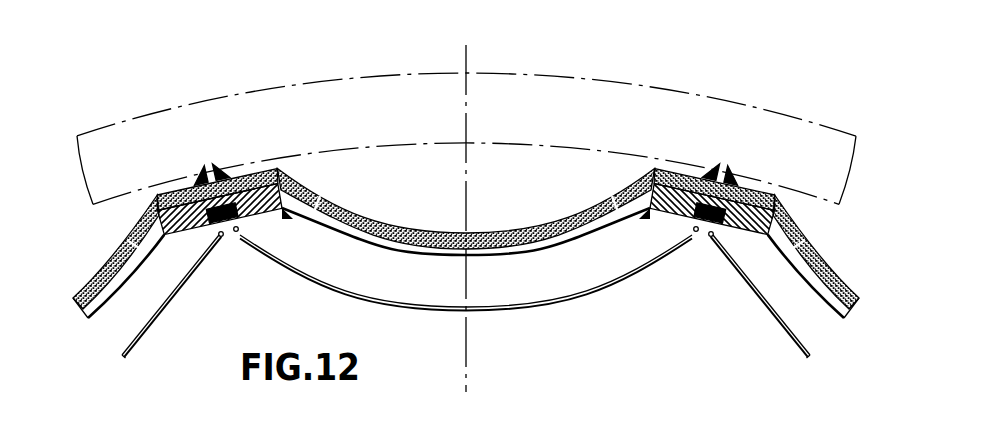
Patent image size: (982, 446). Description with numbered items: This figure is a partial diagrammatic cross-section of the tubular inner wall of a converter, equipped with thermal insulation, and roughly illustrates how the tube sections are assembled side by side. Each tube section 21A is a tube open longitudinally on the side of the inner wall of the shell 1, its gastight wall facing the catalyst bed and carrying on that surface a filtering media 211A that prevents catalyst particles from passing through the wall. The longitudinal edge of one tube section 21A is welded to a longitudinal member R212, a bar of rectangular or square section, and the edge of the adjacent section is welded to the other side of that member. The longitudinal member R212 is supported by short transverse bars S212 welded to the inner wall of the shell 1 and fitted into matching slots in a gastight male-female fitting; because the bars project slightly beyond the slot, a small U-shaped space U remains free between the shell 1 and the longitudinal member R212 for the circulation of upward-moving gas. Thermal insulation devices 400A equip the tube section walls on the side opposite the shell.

The shell 1 is at (282, 115).
The U-shaped space U is at (172, 183).
The tube section 21A is at (367, 237).
The thermal insulation device 400A is at (505, 237).
The transverse bar S212 is at (731, 180).
The longitudinal member R212 is at (756, 208).
The filtering media 211A is at (508, 308).